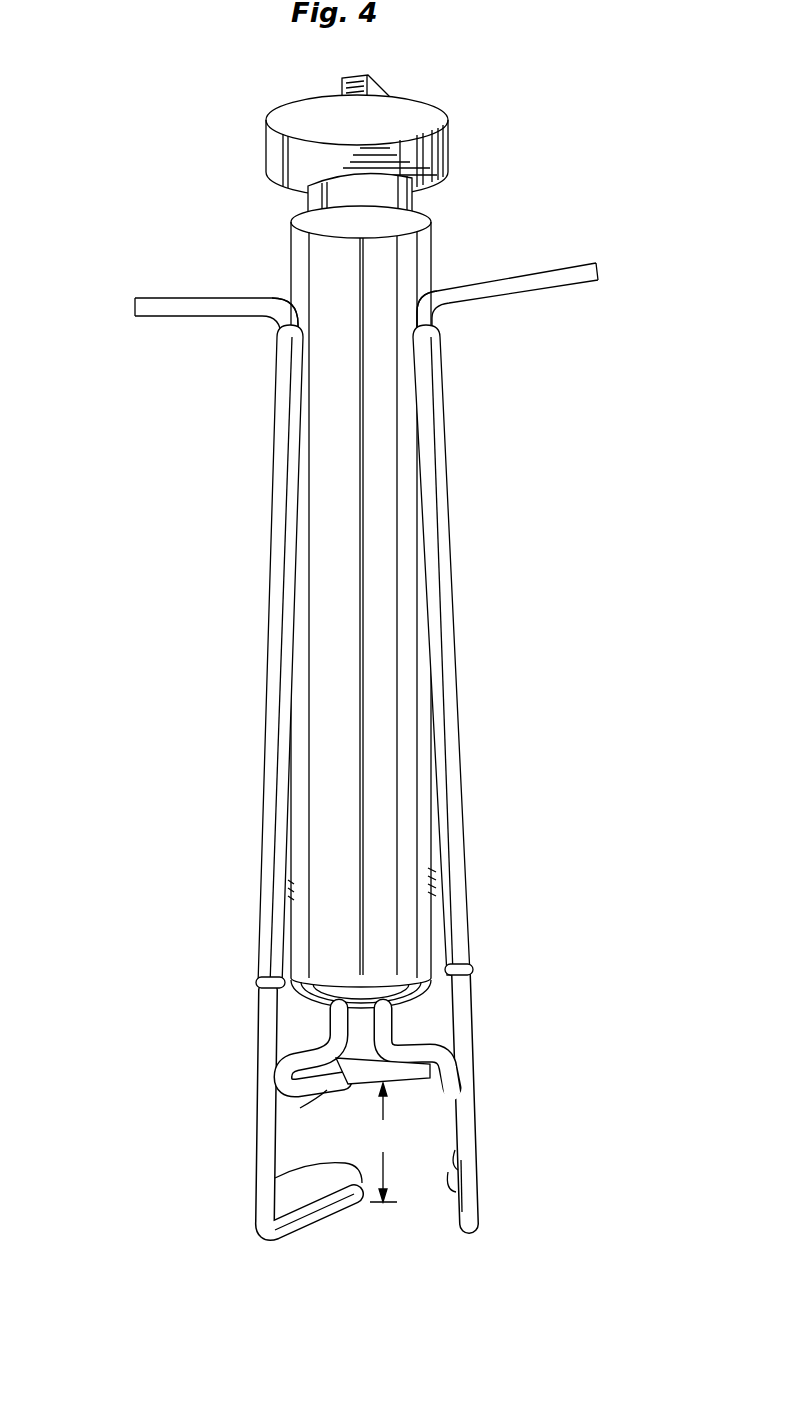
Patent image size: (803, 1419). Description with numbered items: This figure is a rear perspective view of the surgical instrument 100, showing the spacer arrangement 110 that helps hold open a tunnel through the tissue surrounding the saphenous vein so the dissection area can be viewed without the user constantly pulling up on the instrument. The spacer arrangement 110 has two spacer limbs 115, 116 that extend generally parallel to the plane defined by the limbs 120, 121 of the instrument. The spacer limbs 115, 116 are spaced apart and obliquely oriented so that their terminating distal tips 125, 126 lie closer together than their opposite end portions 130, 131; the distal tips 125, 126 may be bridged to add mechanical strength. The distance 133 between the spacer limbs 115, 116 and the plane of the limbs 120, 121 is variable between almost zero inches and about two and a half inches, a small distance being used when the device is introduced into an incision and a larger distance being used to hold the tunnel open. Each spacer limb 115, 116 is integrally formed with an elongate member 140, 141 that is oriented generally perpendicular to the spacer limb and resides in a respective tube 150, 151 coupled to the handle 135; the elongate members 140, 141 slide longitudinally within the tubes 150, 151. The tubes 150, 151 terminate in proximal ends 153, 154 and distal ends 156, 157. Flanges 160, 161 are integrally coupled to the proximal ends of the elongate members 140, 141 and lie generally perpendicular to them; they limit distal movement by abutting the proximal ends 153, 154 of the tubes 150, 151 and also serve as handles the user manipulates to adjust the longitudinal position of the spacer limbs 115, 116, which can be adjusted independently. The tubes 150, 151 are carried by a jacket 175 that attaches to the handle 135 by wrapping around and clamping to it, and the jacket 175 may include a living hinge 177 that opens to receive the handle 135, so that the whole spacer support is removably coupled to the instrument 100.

The surgical instrument 100 is at (585, 524).
The spacer arrangement 110 is at (105, 1060).
The spacer limb 115 is at (312, 1215).
The spacer limb 116 is at (452, 1186).
The limb 120 is at (300, 1108).
The limb 121 is at (462, 1108).
The distal tip 125 is at (275, 1178).
The distal tip 126 is at (462, 1162).
The end portion 130 is at (262, 1240).
The end portion 131 is at (517, 1266).
The distance 133 is at (384, 1142).
The handle 135 is at (416, 200).
The elongate member 140 is at (258, 1085).
The elongate member 141 is at (472, 1063).
The tube 150 is at (262, 827).
The tube 151 is at (466, 866).
The proximal end 153 is at (272, 323).
The proximal end 154 is at (433, 317).
The distal end 156 is at (256, 984).
The distal end 157 is at (472, 972).
The flange 160 is at (157, 296).
The flange 161 is at (543, 268).
The jacket 175 is at (432, 242).
The living hinge 177 is at (355, 235).